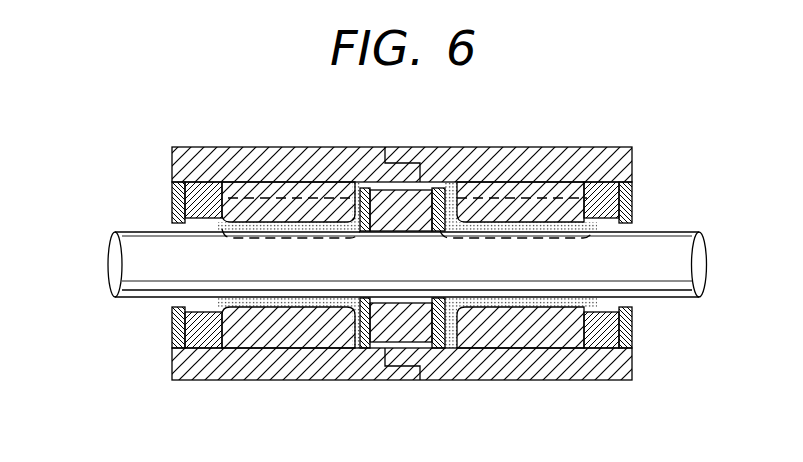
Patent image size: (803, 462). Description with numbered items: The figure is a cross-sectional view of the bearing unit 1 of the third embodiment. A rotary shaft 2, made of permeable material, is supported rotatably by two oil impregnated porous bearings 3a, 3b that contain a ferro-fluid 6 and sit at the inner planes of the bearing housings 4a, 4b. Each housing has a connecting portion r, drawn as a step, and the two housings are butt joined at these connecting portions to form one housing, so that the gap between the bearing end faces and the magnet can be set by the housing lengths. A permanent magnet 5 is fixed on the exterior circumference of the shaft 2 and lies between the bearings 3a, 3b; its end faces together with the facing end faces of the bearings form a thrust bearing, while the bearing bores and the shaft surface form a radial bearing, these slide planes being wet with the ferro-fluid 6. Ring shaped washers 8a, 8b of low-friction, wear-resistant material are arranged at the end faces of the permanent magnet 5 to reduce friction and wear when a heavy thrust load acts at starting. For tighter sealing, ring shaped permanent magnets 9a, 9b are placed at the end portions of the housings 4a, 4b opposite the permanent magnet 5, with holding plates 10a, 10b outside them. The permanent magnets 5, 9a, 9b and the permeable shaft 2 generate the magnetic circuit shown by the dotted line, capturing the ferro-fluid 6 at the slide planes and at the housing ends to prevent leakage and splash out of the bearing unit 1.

The bearing unit 1 is at (202, 380).
The rotary shaft 2 is at (673, 288).
The oil impregnated porous bearing 3a is at (261, 333).
The oil impregnated porous bearing 3b is at (553, 333).
The bearing housing 4a is at (317, 157).
The bearing housing 4b is at (498, 372).
The permanent magnet 5 is at (402, 193).
The ferro-fluid 6 is at (451, 193).
The ring shaped washer 8a is at (358, 333).
The ring shaped washer 8b is at (448, 352).
The ring shaped permanent magnet 9a is at (203, 183).
The ring shaped permanent magnet 9b is at (598, 188).
The holding plate 10a is at (174, 322).
The holding plate 10b is at (630, 332).
The connecting portion r is at (386, 372).